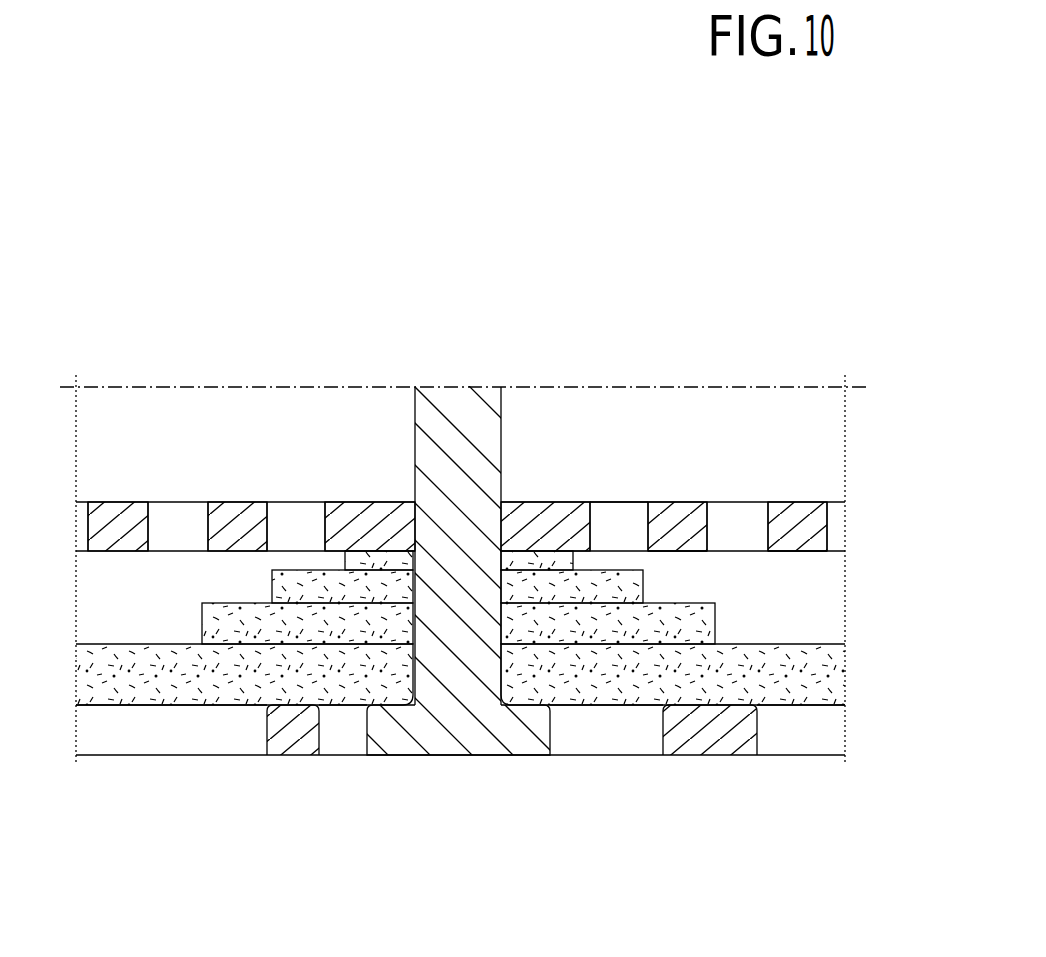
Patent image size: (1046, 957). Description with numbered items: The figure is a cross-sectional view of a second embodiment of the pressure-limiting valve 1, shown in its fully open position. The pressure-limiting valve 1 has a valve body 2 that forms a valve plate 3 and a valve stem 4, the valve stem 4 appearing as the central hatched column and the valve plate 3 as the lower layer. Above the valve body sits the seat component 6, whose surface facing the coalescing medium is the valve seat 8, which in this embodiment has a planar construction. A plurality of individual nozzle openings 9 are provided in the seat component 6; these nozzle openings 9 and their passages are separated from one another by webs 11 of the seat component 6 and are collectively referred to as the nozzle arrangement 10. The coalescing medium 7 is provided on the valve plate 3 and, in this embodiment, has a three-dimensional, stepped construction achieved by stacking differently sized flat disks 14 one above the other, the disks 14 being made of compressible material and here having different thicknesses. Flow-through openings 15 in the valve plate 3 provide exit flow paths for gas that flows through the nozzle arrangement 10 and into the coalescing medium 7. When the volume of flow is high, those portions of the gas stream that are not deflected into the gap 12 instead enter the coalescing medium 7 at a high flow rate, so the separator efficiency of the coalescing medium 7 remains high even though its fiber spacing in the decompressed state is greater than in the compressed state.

The pressure-limiting valve 1 is at (185, 205).
The valve body 2 is at (403, 757).
The valve plate 3 is at (277, 740).
The valve stem 4 is at (488, 437).
The seat component 6 is at (120, 518).
The coalescing medium 7 is at (802, 683).
The valve seat 8 is at (690, 552).
The nozzle openings 9 is at (82, 518).
The nozzle arrangement 10 is at (650, 478).
The webs 11 is at (240, 516).
The gap 12 is at (148, 586).
The flat disks 14 is at (522, 557).
The flow-through openings 15 is at (162, 735).